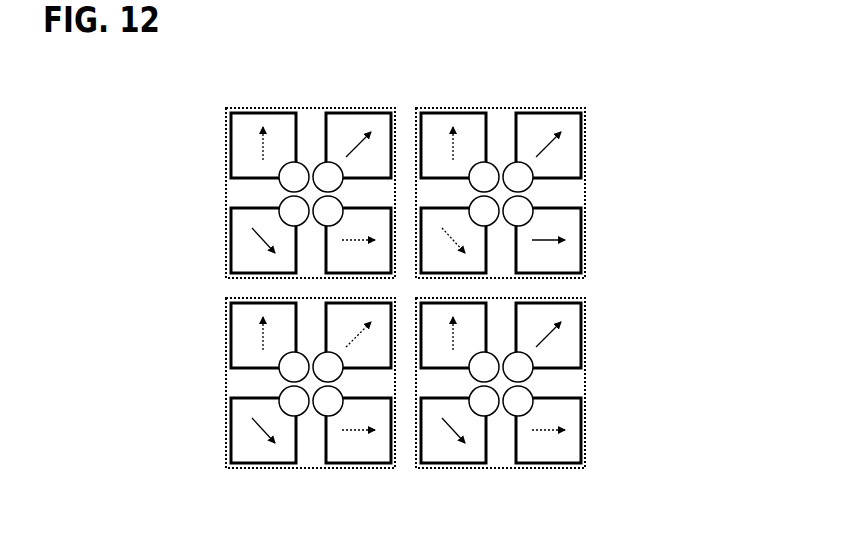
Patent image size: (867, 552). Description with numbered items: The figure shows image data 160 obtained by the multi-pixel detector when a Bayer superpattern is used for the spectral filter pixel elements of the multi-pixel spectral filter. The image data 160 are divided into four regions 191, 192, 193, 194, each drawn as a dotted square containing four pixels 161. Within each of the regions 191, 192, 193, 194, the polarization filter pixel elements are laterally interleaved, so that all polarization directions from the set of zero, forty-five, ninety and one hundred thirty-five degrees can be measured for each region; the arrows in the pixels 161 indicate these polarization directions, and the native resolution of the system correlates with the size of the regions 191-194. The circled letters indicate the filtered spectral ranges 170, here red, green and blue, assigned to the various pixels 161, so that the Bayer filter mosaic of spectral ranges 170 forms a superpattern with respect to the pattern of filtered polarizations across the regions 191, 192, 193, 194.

The image data 160 is at (439, 291).
The pixel 161 is at (290, 118).
The filtered spectral range 170 is at (280, 179).
The region 191 is at (232, 108).
The region 192 is at (578, 108).
The region 193 is at (237, 470).
The region 194 is at (585, 340).